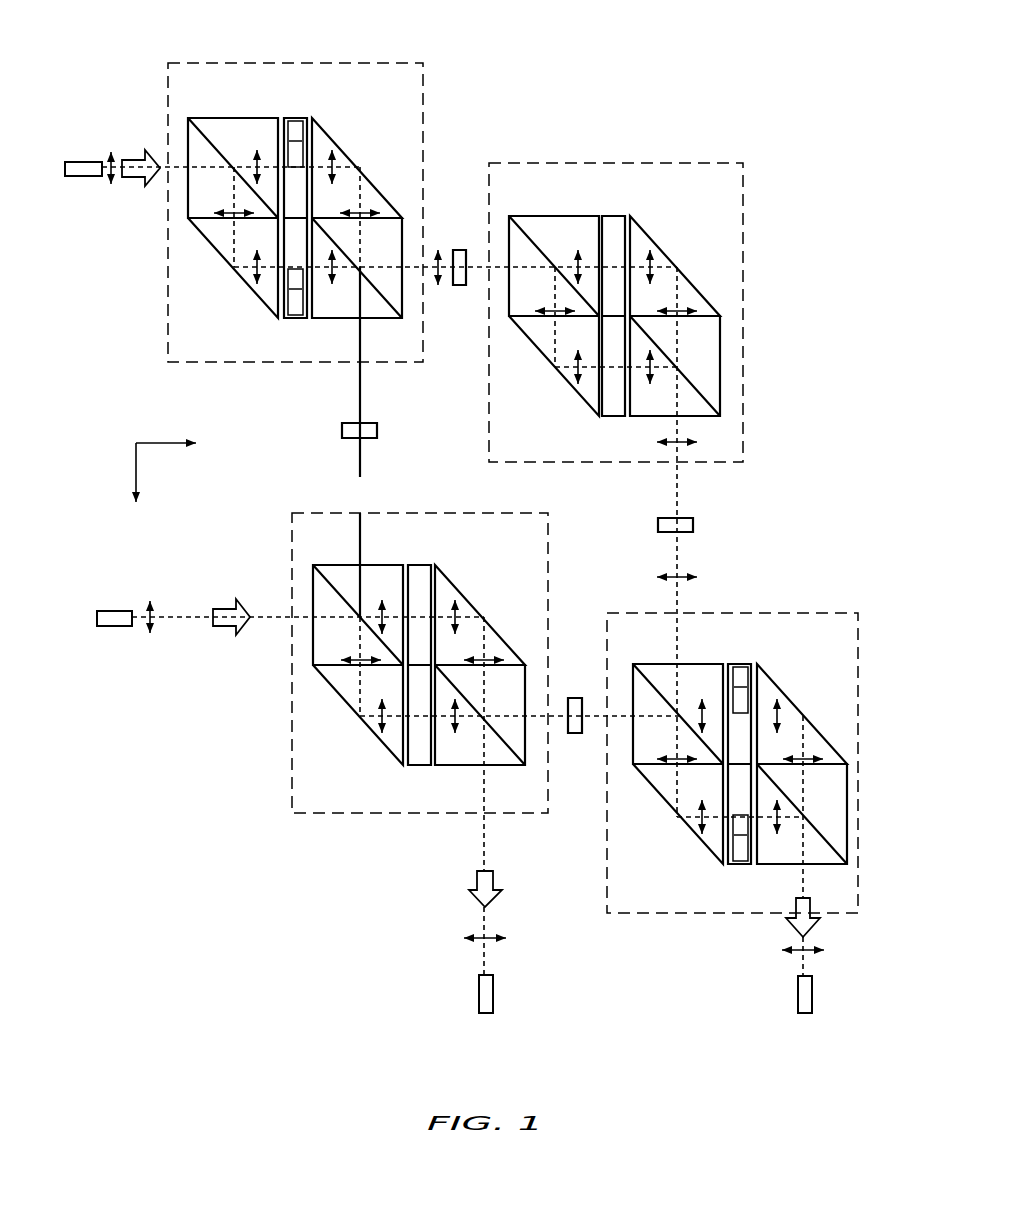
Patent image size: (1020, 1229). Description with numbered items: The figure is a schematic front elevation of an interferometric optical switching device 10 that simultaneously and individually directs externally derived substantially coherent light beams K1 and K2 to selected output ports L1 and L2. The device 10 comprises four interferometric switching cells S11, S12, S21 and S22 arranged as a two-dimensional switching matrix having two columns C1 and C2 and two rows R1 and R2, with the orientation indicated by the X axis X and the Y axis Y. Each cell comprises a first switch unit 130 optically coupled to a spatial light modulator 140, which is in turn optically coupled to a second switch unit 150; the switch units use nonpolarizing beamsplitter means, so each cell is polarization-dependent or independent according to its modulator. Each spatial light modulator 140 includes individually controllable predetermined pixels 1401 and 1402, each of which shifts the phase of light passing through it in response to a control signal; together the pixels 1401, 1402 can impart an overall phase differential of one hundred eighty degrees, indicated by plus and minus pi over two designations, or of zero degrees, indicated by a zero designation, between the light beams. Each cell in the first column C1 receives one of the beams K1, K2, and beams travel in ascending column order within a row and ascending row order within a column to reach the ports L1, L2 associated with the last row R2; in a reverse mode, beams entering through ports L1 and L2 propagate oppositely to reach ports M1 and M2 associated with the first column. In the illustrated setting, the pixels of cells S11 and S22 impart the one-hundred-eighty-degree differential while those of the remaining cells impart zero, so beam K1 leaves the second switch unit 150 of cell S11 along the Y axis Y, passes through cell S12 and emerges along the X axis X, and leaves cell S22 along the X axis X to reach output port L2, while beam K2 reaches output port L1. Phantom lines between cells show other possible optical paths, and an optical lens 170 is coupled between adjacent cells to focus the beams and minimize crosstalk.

The interferometric optical switching device 10 is at (523, 63).
The first switch unit 130 is at (209, 253).
The spatial light modulator 140 is at (298, 322).
The predetermined pixel 1401 is at (296, 118).
The predetermined pixel 1402 is at (289, 319).
The second switch unit 150 is at (369, 169).
The optical lens 170 is at (460, 250).
The interferometric switching cell S11 is at (296, 63).
The interferometric switching cell S12 is at (618, 163).
The interferometric switching cell S21 is at (410, 513).
The interferometric switching cell S22 is at (741, 613).
The port M1 is at (77, 162).
The externally derived substantially coherent light beam K1 is at (108, 154).
The row R1 is at (114, 183).
The port M2 is at (119, 611).
The externally derived substantially coherent light beam K2 is at (171, 610).
The row R2 is at (175, 631).
The output port L1 is at (494, 993).
The column C1 is at (485, 961).
The output port L2 is at (813, 994).
The column C2 is at (803, 975).
The X axis X is at (134, 487).
The Y axis Y is at (176, 445).